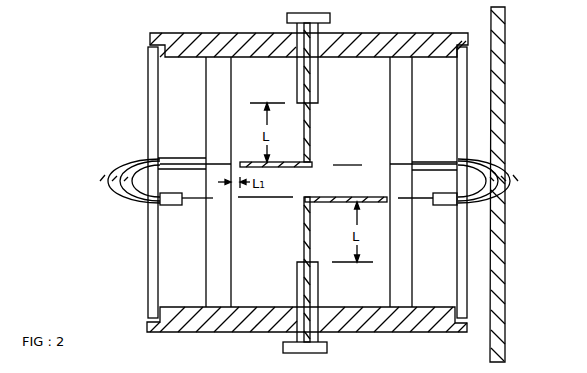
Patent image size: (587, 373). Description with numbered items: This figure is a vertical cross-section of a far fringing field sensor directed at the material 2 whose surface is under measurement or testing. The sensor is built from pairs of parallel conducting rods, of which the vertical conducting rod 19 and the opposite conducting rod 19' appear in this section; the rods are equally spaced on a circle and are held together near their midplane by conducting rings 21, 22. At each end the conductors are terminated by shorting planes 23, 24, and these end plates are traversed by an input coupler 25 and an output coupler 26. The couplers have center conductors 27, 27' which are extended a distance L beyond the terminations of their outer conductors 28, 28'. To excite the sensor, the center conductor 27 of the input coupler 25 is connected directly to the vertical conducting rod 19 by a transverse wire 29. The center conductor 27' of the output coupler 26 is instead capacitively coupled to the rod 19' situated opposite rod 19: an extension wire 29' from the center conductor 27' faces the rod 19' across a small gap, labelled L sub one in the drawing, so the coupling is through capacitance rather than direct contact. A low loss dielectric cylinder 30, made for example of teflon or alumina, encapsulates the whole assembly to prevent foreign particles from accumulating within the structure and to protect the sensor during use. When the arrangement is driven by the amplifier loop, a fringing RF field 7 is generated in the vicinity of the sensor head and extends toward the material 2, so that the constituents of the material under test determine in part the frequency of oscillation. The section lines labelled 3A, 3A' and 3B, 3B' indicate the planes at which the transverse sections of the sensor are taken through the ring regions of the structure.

The material 2 is at (508, 37).
The fringing RF field 7 is at (131, 158).
The conducting rod 19 is at (401, 182).
The conducting rod 19' is at (218, 182).
The conducting ring 21 is at (427, 192).
The conducting ring 22 is at (423, 157).
The shorting plane 23 is at (307, 319).
The shorting plane 24 is at (309, 45).
The input coupler 25 is at (281, 347).
The output coupler 26 is at (285, 16).
The center conductor 27 is at (291, 269).
The center conductor 27' is at (325, 92).
The outer conductor 28 is at (325, 302).
The outer conductor 28' is at (327, 63).
The transverse wire 29 is at (346, 191).
The extension wire 29' is at (278, 176).
The dielectric cylinder 30 is at (146, 262).
The section line 3A is at (536, 198).
The section line 3A' is at (119, 197).
The section line 3B is at (537, 167).
The section line 3B' is at (128, 164).